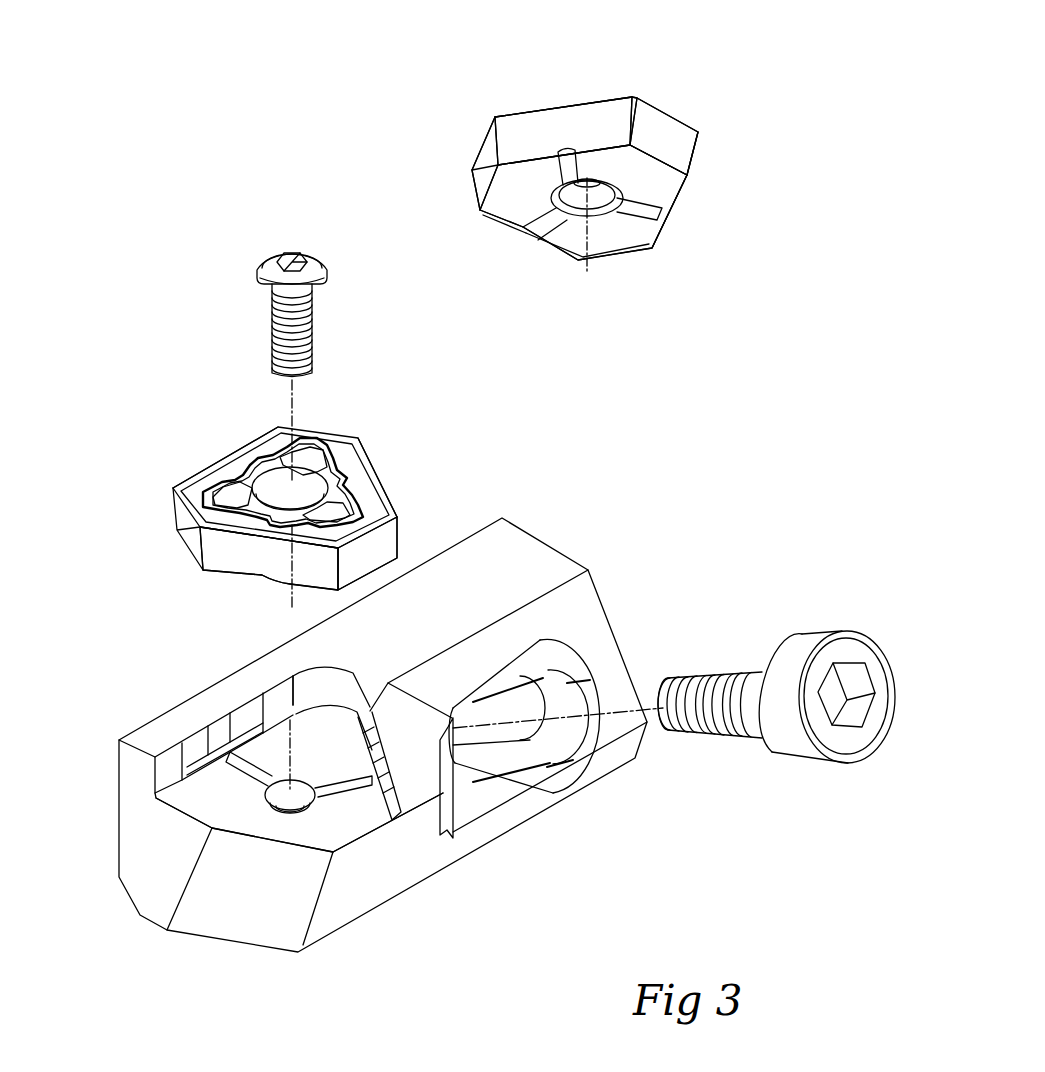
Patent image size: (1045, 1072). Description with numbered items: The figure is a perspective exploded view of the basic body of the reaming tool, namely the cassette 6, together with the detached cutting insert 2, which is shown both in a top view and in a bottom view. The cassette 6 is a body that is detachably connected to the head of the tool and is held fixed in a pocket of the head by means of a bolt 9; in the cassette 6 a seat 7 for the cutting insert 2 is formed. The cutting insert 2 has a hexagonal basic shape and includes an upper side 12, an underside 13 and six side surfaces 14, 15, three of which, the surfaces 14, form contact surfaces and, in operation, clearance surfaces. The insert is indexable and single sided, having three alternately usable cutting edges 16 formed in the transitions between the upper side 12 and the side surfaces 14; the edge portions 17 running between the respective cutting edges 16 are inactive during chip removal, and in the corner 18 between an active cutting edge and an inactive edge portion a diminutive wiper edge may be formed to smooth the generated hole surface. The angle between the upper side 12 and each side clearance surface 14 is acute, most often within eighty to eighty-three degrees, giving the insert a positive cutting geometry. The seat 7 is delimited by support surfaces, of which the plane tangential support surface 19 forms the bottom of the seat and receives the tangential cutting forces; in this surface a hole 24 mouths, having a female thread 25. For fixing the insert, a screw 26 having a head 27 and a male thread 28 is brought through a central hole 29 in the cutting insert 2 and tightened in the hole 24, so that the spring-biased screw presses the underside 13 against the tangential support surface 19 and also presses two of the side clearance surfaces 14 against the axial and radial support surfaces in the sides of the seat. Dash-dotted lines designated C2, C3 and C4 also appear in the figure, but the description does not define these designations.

The cutting insert 2 is at (674, 227).
The cassette 6 is at (391, 744).
The seat 7 is at (336, 684).
The bolt 9 is at (797, 762).
The upper side 12 is at (347, 457).
The underside 13 is at (583, 208).
The side surfaces 14 is at (416, 343).
The side surfaces 15 is at (380, 547).
The cutting edges 16 is at (555, 108).
The edge portions 17 is at (480, 153).
The corner 18 is at (632, 110).
The tangential support surface 19 is at (299, 815).
The hole 24 is at (287, 787).
The female thread 25 is at (298, 803).
The screw 26 is at (306, 309).
The head 27 is at (318, 258).
The male thread 28 is at (270, 327).
The central hole 29 is at (577, 198).
The screw axis C2 is at (292, 393).
The insert axis C3 is at (290, 607).
The pocket hole axis C4 is at (297, 728).